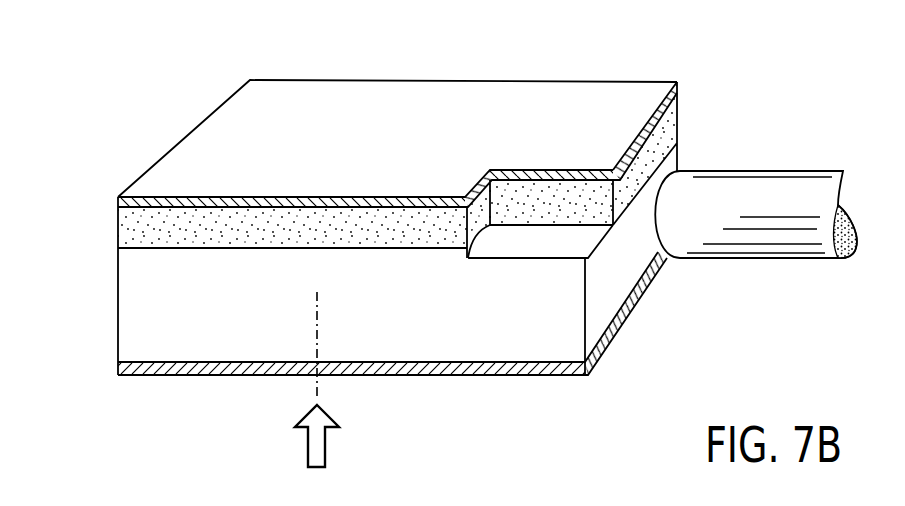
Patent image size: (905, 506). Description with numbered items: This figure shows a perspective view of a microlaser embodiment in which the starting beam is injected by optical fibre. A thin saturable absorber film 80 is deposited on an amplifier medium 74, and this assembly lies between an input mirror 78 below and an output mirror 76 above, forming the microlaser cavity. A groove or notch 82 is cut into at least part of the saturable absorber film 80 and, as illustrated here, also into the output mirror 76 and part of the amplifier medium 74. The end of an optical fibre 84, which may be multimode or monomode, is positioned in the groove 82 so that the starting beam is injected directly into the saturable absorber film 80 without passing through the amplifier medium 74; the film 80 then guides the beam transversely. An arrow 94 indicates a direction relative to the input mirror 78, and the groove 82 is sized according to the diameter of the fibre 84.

The amplifier medium 74 is at (124, 301).
The output mirror 76 is at (225, 142).
The input mirror 78 is at (128, 367).
The saturable absorber film 80 is at (118, 225).
The groove 82 is at (582, 242).
The optical fibre 84 is at (743, 180).
The direction arrow 94 is at (326, 445).